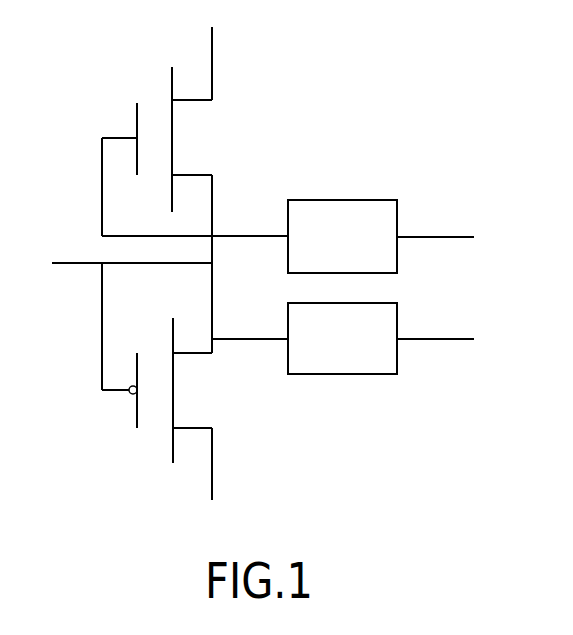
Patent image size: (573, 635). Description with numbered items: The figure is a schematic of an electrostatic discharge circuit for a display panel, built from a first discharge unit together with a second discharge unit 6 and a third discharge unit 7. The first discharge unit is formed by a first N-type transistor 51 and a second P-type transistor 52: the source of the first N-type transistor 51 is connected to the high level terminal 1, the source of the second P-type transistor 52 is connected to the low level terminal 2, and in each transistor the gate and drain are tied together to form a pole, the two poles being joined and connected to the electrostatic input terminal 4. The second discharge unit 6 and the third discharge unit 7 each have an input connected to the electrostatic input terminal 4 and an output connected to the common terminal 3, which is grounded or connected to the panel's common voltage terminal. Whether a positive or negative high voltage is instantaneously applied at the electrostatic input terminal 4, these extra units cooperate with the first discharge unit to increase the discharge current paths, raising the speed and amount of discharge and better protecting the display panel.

The high level terminal 1 is at (212, 59).
The low level terminal 2 is at (211, 468).
The common terminal 3 is at (443, 237).
The electrostatic input terminal 4 is at (80, 263).
The first N-type transistor 51 is at (155, 143).
The second P-type transistor 52 is at (153, 382).
The second discharge unit 6 is at (373, 213).
The third discharge unit 7 is at (367, 360).